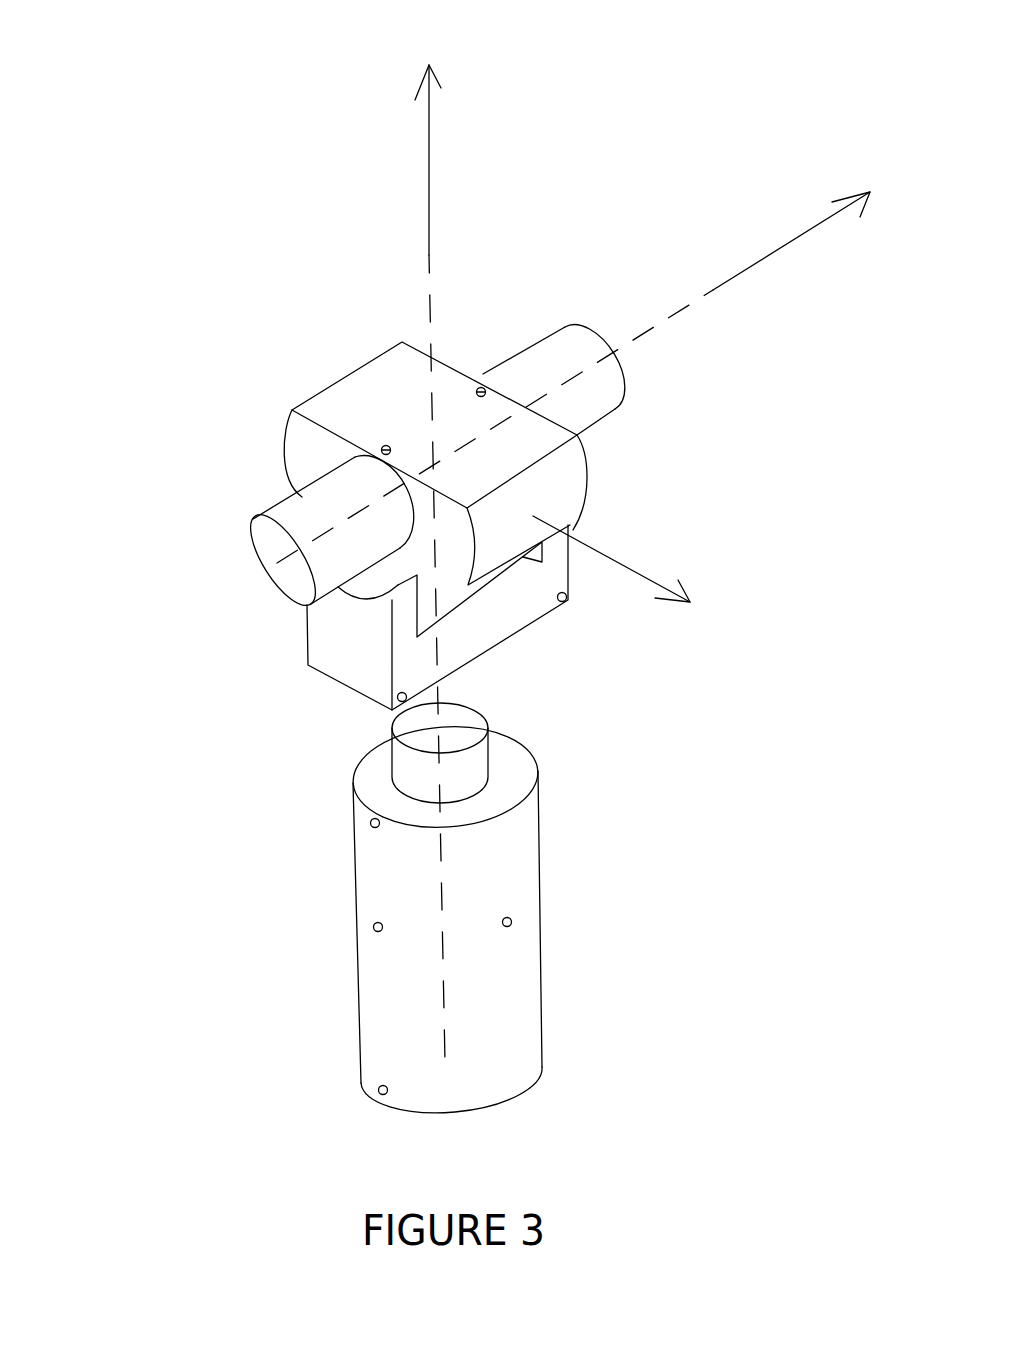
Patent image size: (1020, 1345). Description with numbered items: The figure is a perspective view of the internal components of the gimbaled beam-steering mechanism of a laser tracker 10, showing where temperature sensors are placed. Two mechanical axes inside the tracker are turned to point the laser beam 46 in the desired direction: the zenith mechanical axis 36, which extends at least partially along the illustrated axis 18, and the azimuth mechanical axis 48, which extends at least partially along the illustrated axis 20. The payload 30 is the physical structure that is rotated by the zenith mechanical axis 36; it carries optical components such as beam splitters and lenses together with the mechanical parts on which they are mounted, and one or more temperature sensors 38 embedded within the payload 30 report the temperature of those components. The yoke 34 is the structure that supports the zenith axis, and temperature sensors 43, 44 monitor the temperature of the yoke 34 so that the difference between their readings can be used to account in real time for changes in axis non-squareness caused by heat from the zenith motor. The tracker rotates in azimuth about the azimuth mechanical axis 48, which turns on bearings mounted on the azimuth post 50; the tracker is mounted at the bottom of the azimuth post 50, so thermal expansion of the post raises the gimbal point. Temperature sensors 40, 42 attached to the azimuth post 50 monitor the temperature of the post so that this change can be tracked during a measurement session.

The laser tracker 10 is at (193, 203).
The illustrated axis 18 is at (604, 358).
The illustrated axis 20 is at (425, 531).
The payload 30 is at (292, 410).
The yoke 34 is at (355, 692).
The zenith mechanical axis 36 is at (253, 543).
The temperature sensors 38 is at (481, 388).
The temperature sensor 40 is at (371, 825).
The temperature sensor 42 is at (507, 932).
The temperature sensor 43 is at (406, 703).
The temperature sensor 44 is at (570, 602).
The laser beam 46 is at (613, 560).
The azimuth mechanical axis 48 is at (490, 716).
The azimuth post 50 is at (540, 866).